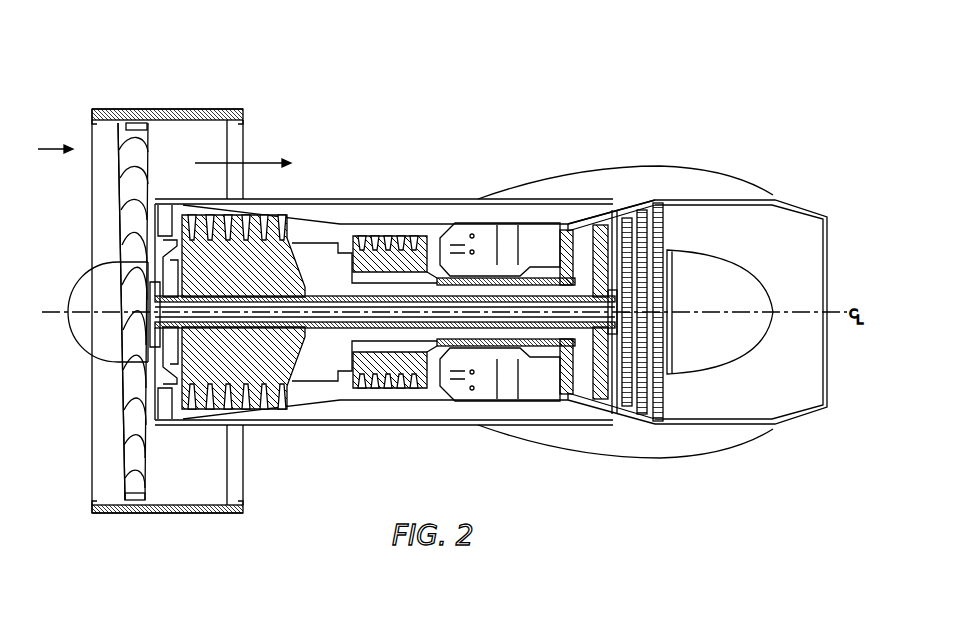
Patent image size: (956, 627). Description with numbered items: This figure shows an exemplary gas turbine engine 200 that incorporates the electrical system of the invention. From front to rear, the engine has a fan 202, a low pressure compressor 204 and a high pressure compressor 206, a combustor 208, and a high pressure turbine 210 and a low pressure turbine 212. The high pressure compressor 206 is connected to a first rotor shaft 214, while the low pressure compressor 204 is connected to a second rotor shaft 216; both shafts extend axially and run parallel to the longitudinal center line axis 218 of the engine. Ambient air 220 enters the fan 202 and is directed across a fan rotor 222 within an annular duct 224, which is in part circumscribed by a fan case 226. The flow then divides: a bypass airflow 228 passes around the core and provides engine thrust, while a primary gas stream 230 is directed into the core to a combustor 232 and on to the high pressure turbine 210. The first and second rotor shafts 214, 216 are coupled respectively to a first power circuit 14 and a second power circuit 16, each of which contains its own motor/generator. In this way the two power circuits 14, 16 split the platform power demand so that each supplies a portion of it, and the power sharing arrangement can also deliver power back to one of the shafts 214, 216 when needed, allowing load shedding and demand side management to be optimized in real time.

The first power circuit 14 is at (538, 278).
The second power circuit 16 is at (585, 213).
The gas turbine engine 200 is at (594, 47).
The fan 202 is at (111, 199).
The low pressure compressor 204 is at (272, 255).
The high pressure compressor 206 is at (393, 387).
The combustor 208 is at (482, 387).
The high pressure turbine 210 is at (568, 230).
The low pressure turbine 212 is at (660, 215).
The first rotor shaft 214 is at (507, 343).
The second rotor shaft 216 is at (582, 340).
The longitudinal center line axis 218 is at (843, 312).
The ambient air 220 is at (55, 147).
The fan rotor 222 is at (135, 490).
The annular duct 224 is at (228, 475).
The fan case 226 is at (183, 512).
The bypass airflow 228 is at (272, 163).
The primary gas stream 230 is at (350, 233).
The combustor 232 is at (483, 238).